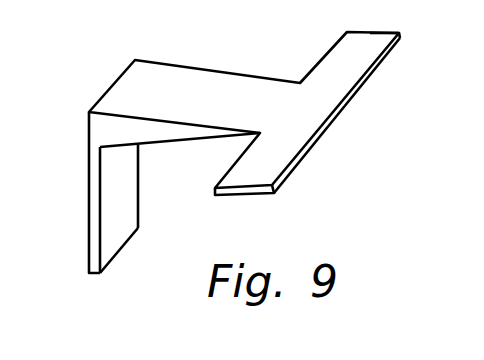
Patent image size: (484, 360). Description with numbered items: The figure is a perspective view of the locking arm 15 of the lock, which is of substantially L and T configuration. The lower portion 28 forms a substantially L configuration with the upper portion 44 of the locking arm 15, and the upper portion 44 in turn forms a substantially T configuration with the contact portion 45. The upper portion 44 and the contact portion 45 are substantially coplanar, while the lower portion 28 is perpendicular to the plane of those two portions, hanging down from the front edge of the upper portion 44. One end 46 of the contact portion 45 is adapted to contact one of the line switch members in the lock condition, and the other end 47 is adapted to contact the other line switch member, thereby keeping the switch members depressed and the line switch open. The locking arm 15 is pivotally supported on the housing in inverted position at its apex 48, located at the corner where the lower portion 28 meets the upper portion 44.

The locking arm 15 is at (176, 175).
The lower portion 28 is at (123, 210).
The upper portion 44 is at (200, 88).
The contact portion 45 is at (307, 113).
The one end 46 is at (389, 14).
The other end 47 is at (242, 177).
The apex 48 is at (105, 127).